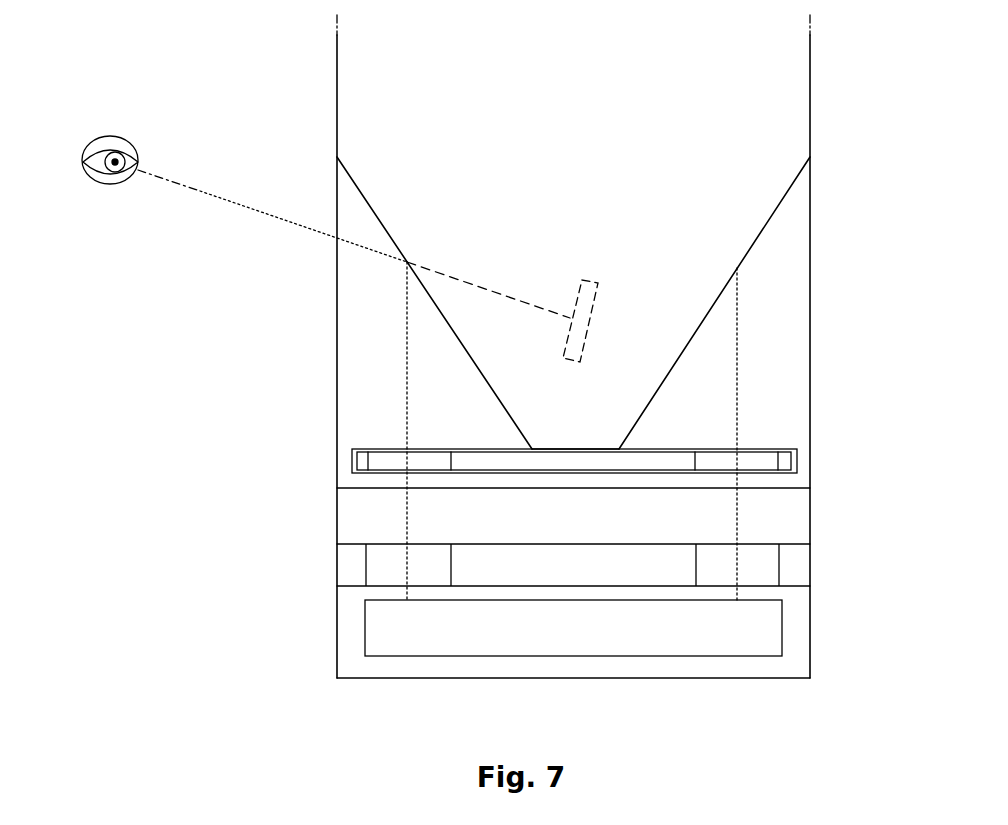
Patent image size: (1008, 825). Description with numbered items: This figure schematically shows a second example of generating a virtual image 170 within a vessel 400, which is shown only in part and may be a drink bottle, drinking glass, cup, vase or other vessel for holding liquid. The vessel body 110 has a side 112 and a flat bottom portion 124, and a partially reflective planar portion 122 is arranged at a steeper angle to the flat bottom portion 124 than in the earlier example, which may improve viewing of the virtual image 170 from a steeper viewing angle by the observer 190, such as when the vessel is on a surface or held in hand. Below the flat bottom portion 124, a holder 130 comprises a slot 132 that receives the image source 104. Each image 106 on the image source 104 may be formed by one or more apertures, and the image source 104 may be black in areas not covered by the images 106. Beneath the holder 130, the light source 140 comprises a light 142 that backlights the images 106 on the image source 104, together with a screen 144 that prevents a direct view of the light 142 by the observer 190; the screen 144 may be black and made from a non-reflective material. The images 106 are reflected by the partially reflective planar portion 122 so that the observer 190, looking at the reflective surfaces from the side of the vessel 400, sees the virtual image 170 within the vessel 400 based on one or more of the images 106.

The vessel 400 is at (643, 103).
The vessel body 110 is at (336, 60).
The side 112 is at (811, 310).
The partially reflective planar portion 122 is at (573, 378).
The flat bottom portion 124 is at (580, 448).
The virtual image 170 is at (505, 302).
The observer 190 is at (214, 189).
The holder 130 is at (328, 460).
The slot 132 is at (798, 460).
The image 106 is at (573, 444).
The image source 104 is at (588, 463).
The screen 144 is at (573, 565).
The light 142 is at (573, 628).
The light source 140 is at (328, 637).